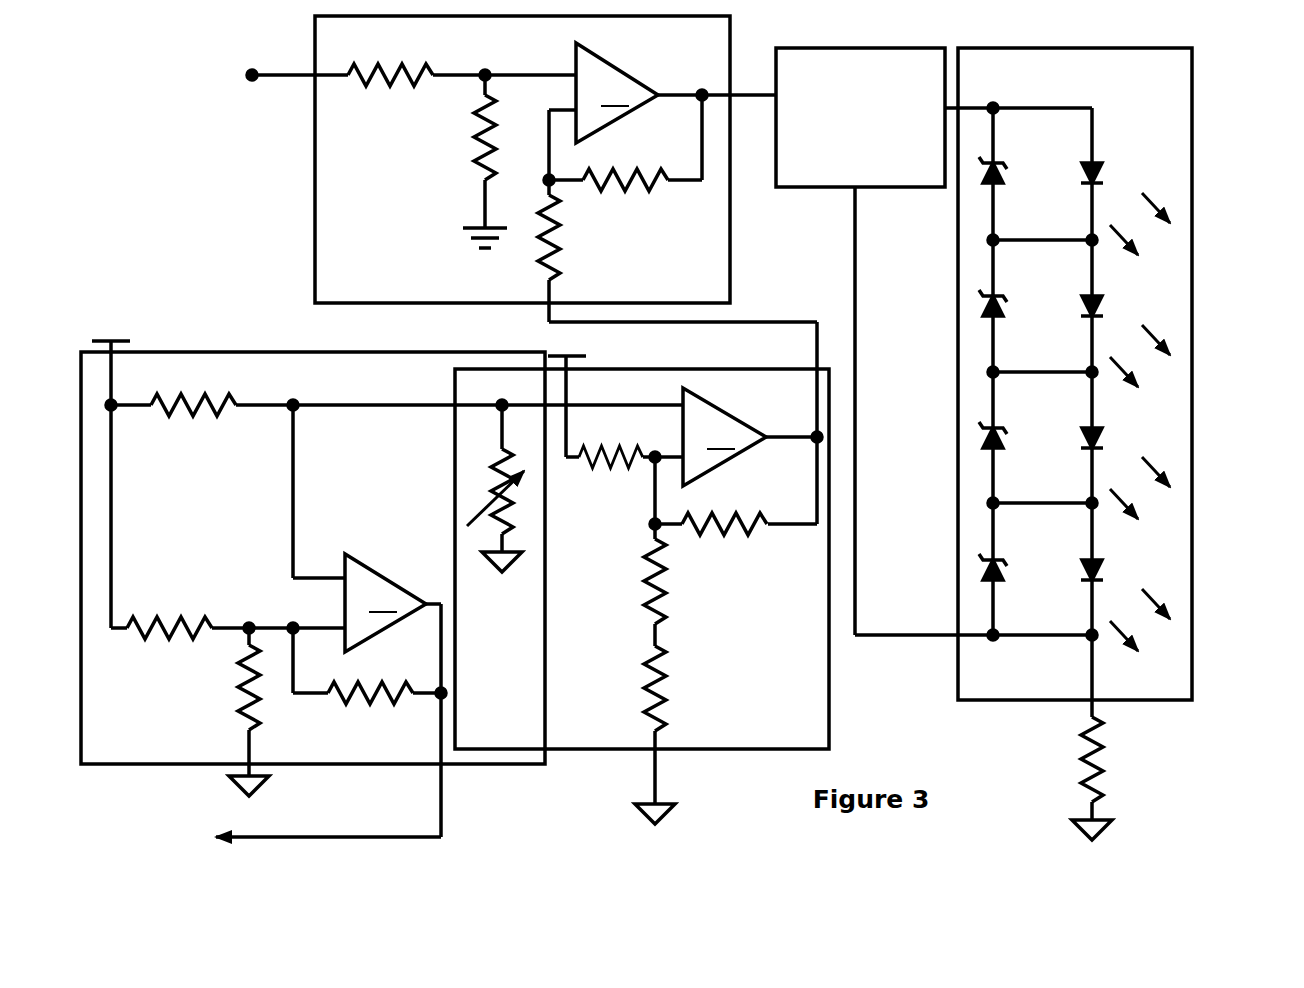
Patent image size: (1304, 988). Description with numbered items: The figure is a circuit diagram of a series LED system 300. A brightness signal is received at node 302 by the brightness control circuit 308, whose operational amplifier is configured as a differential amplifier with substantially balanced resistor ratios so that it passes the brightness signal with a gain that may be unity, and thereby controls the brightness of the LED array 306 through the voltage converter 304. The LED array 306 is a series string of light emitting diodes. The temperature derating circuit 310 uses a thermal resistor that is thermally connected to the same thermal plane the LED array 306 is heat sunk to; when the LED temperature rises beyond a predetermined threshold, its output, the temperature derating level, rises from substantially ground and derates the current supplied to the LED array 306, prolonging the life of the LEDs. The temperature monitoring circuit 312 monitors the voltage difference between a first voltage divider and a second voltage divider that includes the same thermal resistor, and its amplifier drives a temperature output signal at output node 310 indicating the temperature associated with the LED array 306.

The LED system 300 is at (1236, 144).
The brightness signal input node 302 is at (238, 100).
The voltage converter 304 is at (843, 153).
The LED array 306 is at (1060, 104).
The brightness control circuit 308 is at (506, 44).
The temperature derating circuit 310 is at (625, 398).
The temperature monitoring circuit 312 is at (295, 378).